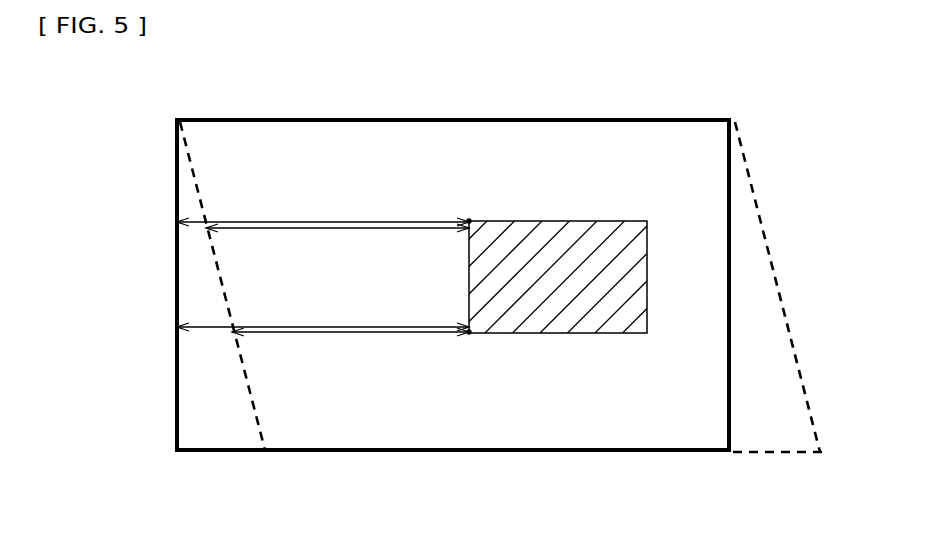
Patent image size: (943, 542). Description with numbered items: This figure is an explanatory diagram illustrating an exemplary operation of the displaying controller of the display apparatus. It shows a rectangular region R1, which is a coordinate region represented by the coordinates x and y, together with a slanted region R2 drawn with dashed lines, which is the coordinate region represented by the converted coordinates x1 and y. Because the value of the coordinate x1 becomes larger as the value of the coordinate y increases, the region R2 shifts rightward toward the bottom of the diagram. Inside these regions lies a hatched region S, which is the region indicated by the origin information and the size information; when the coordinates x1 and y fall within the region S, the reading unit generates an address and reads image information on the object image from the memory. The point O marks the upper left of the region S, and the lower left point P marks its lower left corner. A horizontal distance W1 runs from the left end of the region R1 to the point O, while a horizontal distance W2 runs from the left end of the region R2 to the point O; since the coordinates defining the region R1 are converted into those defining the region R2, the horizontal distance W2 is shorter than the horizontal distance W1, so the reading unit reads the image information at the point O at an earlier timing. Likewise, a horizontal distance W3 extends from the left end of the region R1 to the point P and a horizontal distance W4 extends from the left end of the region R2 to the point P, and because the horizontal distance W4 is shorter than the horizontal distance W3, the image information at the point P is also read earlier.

The region R1 is at (205, 452).
The region R2 is at (262, 438).
The region S is at (648, 273).
The point O is at (469, 205).
The lower left point P is at (468, 349).
The horizontal distance W1 is at (325, 218).
The horizontal distance W2 is at (325, 232).
The horizontal distance W3 is at (380, 323).
The horizontal distance W4 is at (380, 336).